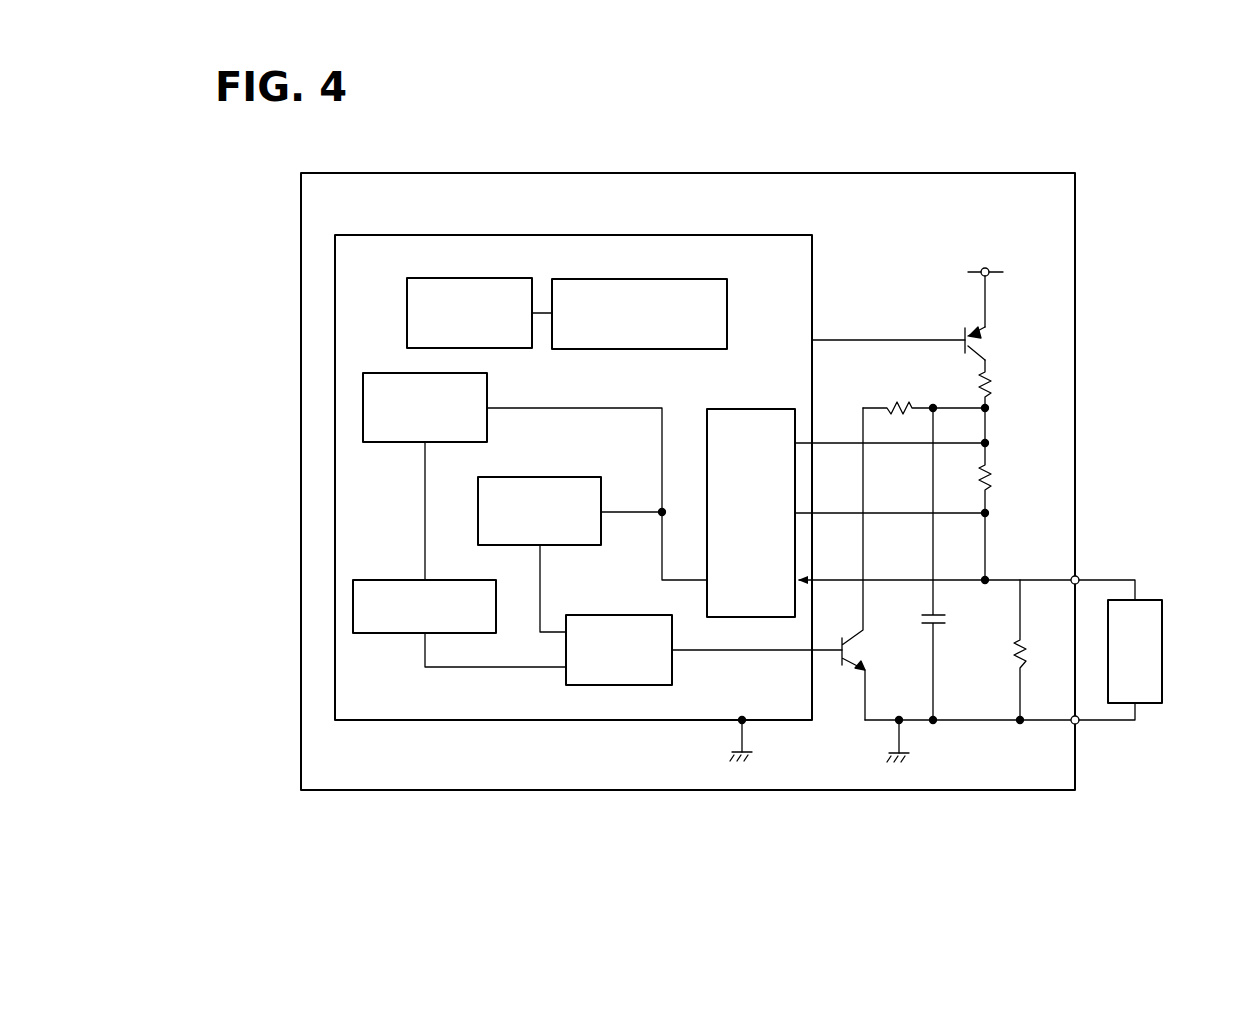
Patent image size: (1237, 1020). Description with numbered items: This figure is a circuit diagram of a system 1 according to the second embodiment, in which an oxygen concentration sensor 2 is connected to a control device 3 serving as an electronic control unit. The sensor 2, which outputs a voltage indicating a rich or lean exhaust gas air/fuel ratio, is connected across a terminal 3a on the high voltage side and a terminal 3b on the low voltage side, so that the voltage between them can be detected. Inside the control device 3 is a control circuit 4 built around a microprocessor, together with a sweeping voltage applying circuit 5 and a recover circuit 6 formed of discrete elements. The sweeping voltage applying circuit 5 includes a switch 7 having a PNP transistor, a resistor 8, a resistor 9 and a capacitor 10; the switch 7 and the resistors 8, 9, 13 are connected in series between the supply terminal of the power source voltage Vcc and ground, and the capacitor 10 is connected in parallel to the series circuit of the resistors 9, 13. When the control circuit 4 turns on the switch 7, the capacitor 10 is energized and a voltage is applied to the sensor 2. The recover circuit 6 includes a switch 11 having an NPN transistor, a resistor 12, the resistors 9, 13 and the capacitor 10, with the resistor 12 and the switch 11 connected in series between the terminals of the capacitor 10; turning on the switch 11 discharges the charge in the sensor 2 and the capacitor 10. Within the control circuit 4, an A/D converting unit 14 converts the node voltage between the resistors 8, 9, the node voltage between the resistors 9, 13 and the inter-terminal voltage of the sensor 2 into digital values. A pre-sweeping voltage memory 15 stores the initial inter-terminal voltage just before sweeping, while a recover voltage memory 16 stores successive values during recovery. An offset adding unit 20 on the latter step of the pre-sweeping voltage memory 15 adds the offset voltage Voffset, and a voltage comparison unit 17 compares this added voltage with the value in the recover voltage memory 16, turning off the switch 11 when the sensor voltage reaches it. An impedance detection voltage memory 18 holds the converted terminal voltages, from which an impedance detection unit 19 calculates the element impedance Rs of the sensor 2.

The system 1 is at (1120, 246).
The oxygen concentration sensor 2 is at (1163, 650).
The control device 3 is at (695, 173).
The terminal 3a is at (1080, 575).
The terminal 3b is at (1080, 725).
The control circuit 4 is at (585, 235).
The sweeping voltage applying circuit 5 is at (986, 347).
The recover circuit 6 is at (874, 585).
The switch 7 is at (963, 337).
The resistor 8 is at (995, 386).
The resistor 9 is at (995, 479).
The capacitor 10 is at (948, 618).
The switch 11 is at (860, 645).
The resistor 12 is at (898, 402).
The resistor 13 is at (1028, 662).
The A/D converting unit 14 is at (755, 409).
The pre-sweeping voltage memory 15 is at (400, 442).
The recover voltage memory 16 is at (568, 477).
The voltage comparison unit 17 is at (620, 615).
The impedance detection voltage memory 18 is at (641, 279).
The impedance detection unit 19 is at (471, 278).
The offset adding unit 20 is at (375, 580).